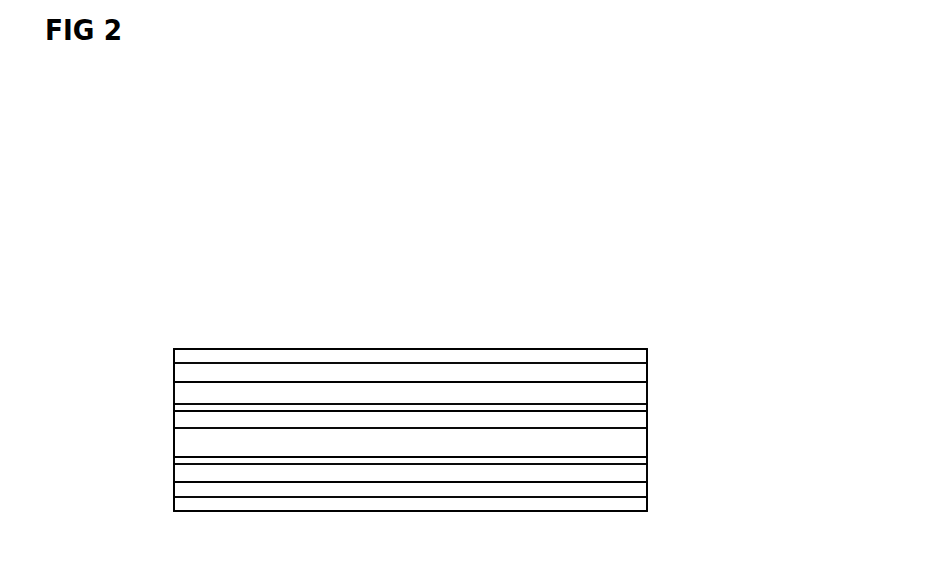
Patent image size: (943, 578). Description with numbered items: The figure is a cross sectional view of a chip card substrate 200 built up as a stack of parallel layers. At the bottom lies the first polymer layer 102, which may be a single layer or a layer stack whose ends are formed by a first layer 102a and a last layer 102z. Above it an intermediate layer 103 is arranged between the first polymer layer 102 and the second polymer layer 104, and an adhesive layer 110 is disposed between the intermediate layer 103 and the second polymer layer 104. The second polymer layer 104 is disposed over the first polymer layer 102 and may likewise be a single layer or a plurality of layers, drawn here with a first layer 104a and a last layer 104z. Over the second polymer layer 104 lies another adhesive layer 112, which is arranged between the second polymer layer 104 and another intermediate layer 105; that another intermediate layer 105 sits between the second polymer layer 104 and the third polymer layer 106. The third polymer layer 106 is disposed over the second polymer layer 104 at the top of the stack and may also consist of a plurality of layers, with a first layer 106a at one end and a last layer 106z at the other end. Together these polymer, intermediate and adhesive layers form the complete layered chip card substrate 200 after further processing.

The chip card substrate 200 is at (792, 262).
The third polymer layer 106 is at (510, 358).
The last layer of the layer stack 106a-z 106z is at (647, 355).
The first layer of the layer stack 106a-z 106a is at (647, 368).
The another intermediate layer 105 is at (647, 396).
The another adhesive layer 112 is at (182, 406).
The second polymer layer 104 is at (337, 439).
The last layer of the layer stack 104a-z 104z is at (182, 418).
The first layer of the layer stack 104a-z 104a is at (182, 446).
The adhesive layer 110 is at (182, 463).
The intermediate layer 103 is at (647, 474).
The first polymer layer 102 is at (510, 503).
The last layer of the layer stack 102a-z 102z is at (647, 490).
The first layer of the layer stack 102a-z 102a is at (647, 508).